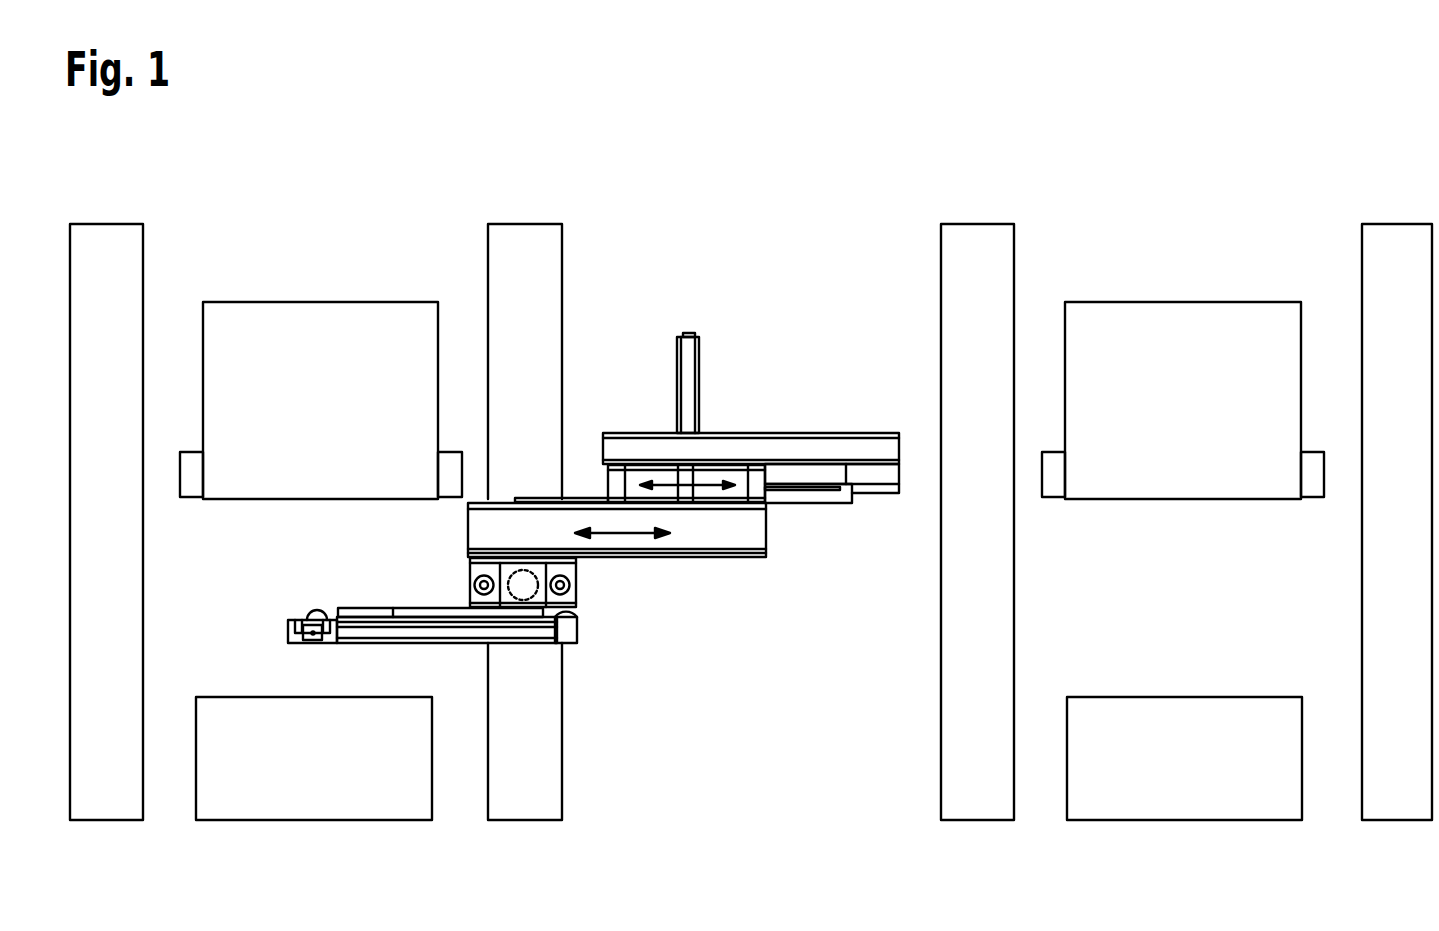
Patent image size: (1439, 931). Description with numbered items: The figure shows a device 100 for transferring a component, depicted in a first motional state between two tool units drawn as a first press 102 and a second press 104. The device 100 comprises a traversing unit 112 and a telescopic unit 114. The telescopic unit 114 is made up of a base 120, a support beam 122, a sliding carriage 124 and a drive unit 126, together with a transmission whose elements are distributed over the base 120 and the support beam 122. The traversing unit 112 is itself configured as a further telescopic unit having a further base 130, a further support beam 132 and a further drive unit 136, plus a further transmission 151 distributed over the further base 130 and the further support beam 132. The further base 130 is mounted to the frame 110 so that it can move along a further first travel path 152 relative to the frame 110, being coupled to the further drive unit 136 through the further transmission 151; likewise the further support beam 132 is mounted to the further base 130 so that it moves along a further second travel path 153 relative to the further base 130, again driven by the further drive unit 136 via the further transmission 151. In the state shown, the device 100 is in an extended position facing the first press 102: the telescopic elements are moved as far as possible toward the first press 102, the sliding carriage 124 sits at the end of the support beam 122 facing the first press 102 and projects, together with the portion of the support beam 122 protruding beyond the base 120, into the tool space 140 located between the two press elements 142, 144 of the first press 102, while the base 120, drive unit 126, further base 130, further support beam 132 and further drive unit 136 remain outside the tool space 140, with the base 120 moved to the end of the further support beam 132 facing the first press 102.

The device 100 is at (838, 222).
The first press 102 is at (368, 222).
The second press 104 is at (1221, 222).
The frame 110 is at (873, 433).
The traversing unit 112 is at (905, 519).
The telescopic unit 114 is at (710, 616).
The base 120 is at (575, 575).
The support beam 122 is at (445, 643).
The sliding carriage 124 is at (313, 642).
The drive unit 126 is at (575, 602).
The further base 130 is at (766, 478).
The further support beam 132 is at (766, 540).
The further drive unit 136 is at (677, 352).
The tool space 140 is at (288, 560).
The press element 142 is at (263, 302).
The press element 144 is at (220, 697).
The further transmission 151 is at (590, 488).
The further first travel path 152 is at (708, 485).
The further second travel path 153 is at (633, 533).